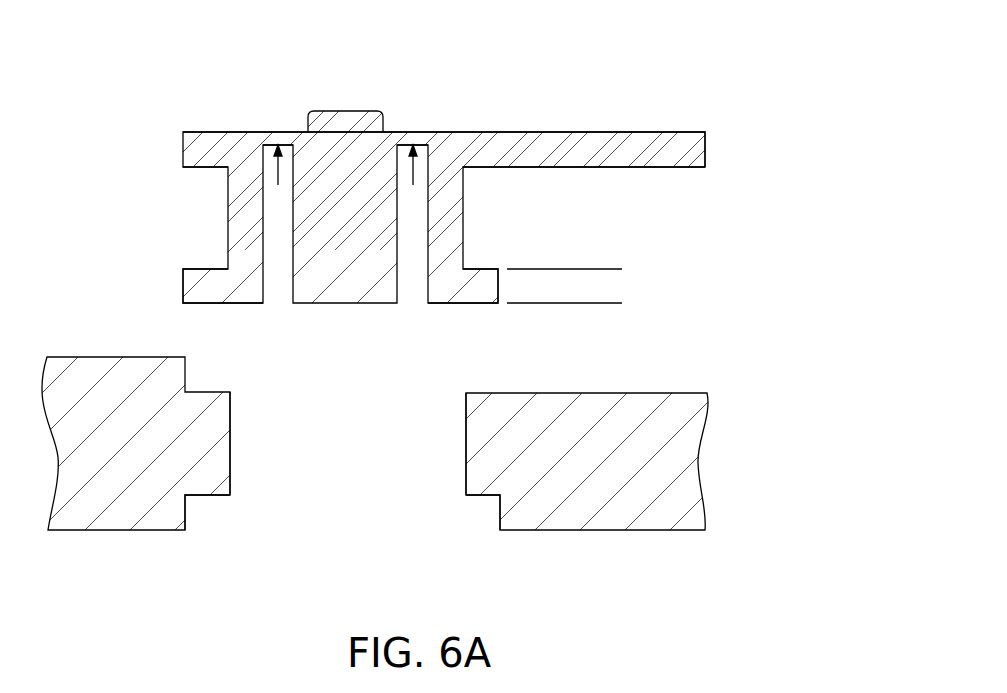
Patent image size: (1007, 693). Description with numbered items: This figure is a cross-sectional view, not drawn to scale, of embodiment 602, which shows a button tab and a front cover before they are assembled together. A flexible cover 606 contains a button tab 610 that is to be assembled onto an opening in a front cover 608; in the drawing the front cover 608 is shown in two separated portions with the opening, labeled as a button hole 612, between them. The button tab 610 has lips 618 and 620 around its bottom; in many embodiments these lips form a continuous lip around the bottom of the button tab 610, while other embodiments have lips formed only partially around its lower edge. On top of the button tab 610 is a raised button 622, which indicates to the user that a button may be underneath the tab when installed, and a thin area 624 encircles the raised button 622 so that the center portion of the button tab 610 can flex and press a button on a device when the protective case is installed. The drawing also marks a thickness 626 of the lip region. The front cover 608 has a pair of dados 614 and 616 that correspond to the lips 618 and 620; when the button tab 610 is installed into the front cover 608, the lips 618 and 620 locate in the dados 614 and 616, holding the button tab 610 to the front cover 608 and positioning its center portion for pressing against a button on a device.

The embodiment 602 is at (544, 562).
The flexible cover 606 is at (543, 145).
The front cover 608 is at (647, 443).
The button tab 610 is at (468, 132).
The button hole 612 is at (450, 415).
The dado 614 is at (208, 497).
The dado 616 is at (483, 496).
The lip 618 is at (197, 268).
The lip 620 is at (485, 269).
The raised button 622 is at (347, 111).
The thin area 624 is at (413, 124).
The thickness 626 is at (613, 311).